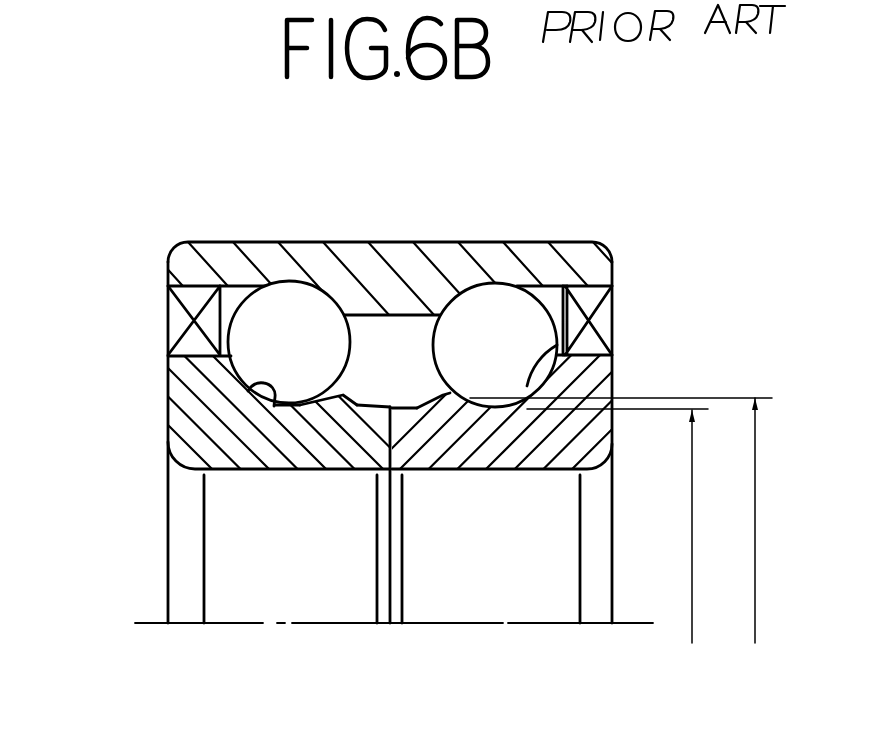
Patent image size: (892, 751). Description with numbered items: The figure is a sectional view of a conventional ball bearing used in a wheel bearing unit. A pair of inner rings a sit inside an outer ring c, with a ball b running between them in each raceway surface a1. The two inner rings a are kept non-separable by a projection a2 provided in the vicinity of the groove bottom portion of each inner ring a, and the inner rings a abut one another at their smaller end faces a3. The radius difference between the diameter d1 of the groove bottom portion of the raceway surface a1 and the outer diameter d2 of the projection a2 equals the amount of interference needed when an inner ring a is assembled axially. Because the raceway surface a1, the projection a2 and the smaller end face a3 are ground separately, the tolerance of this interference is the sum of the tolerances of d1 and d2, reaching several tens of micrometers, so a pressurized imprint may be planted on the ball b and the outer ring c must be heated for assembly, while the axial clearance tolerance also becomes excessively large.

The inner ring a is at (168, 385).
The raceway surface a1 is at (595, 172).
The projection a2 is at (442, 400).
The smaller end face a3 is at (440, 518).
The ball b is at (292, 303).
The outer ring c is at (432, 245).
The diameter of the groove bottom portion d1 is at (673, 526).
The outer diameter of the projection d2 is at (734, 520).